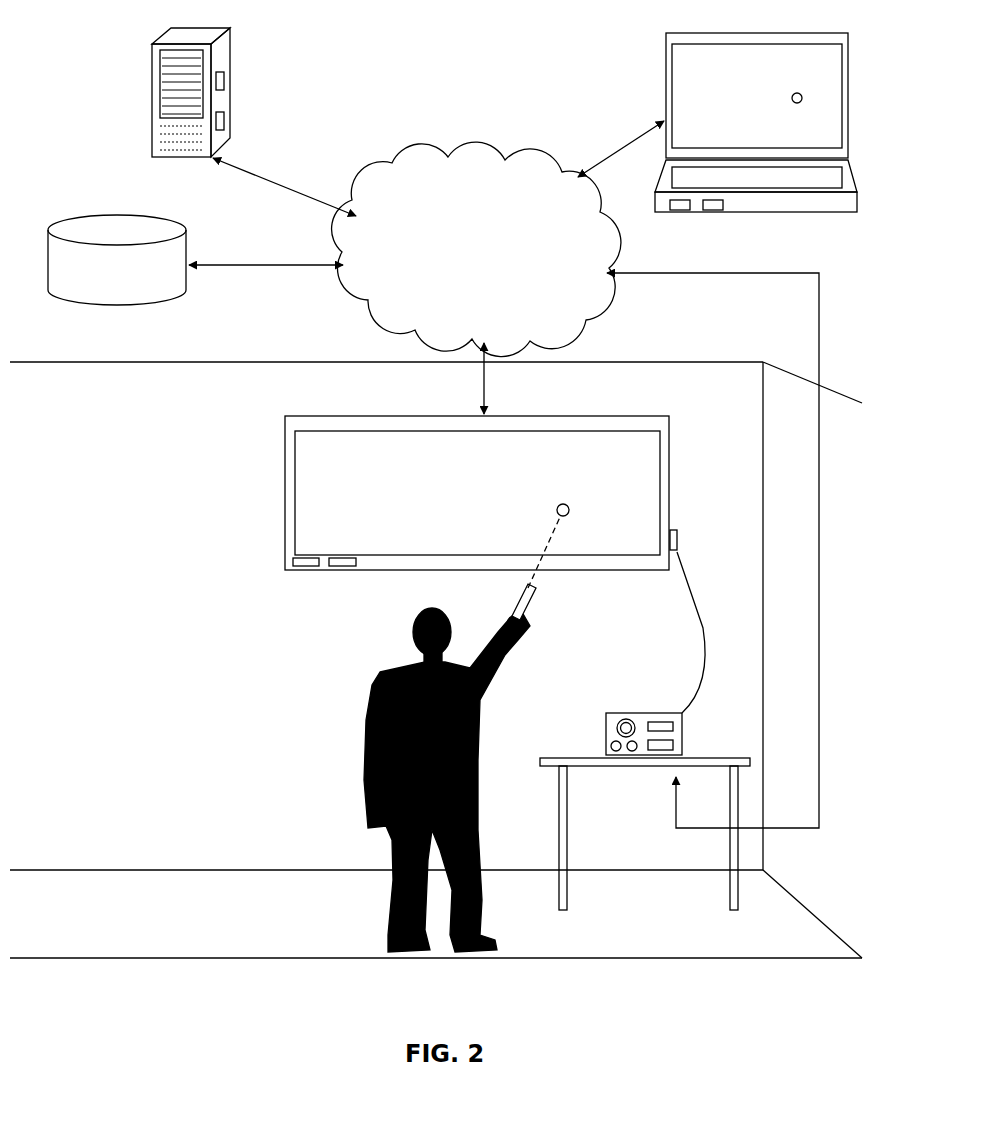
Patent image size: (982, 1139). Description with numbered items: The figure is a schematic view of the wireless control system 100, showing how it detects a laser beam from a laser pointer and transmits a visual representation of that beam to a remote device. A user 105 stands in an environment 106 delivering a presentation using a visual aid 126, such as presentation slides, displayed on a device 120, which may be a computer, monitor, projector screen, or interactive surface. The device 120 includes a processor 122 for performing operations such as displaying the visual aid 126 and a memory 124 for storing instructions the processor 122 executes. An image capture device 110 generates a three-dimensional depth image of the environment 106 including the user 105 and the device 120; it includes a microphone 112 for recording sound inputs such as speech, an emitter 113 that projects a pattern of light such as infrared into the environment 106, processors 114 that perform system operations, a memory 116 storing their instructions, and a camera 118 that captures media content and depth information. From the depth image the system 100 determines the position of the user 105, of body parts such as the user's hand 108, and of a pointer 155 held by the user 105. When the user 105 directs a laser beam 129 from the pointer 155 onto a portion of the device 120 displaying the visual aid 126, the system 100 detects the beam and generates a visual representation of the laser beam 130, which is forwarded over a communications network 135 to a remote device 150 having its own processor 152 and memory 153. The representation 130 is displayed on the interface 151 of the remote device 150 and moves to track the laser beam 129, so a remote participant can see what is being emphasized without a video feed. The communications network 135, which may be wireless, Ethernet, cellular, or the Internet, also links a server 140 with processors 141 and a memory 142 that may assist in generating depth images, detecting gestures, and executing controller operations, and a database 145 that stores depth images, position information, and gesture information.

The wireless control system 100 is at (198, 980).
The user 105 is at (365, 705).
The environment 106 is at (436, 660).
The user's hand 108 is at (524, 620).
The image capture device 110 is at (628, 778).
The microphone 112 is at (611, 746).
The emitter 113 is at (632, 751).
The processor 114 is at (682, 743).
The memory 116 is at (682, 727).
The camera 118 is at (628, 713).
The device 120 is at (437, 564).
The processor 122 is at (293, 561).
The memory 124 is at (341, 567).
The visual aid 126 is at (310, 452).
The laser beam 129 is at (570, 510).
The visual representation of the laser beam 130 is at (797, 103).
The communications network 135 is at (476, 249).
The server 140 is at (152, 45).
The processor 141 is at (226, 120).
The memory 142 is at (226, 80).
The database 145 is at (117, 260).
The remote device 150 is at (711, 150).
The interface 151 is at (681, 52).
The processor 152 is at (680, 212).
The memory 153 is at (713, 212).
The pointer 155 is at (536, 597).